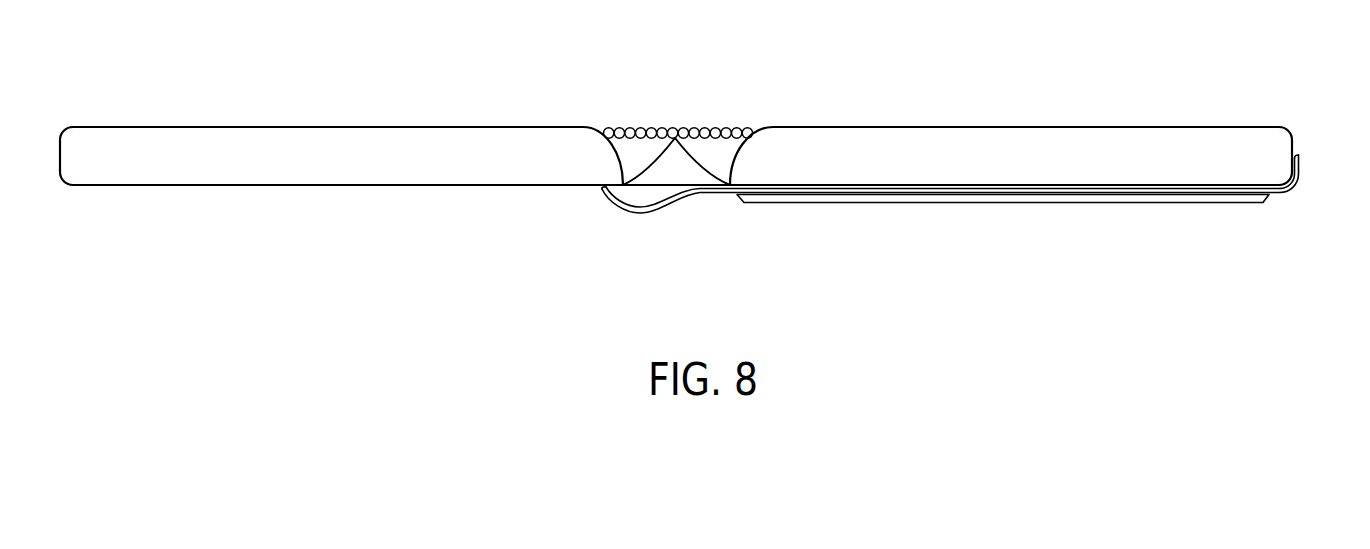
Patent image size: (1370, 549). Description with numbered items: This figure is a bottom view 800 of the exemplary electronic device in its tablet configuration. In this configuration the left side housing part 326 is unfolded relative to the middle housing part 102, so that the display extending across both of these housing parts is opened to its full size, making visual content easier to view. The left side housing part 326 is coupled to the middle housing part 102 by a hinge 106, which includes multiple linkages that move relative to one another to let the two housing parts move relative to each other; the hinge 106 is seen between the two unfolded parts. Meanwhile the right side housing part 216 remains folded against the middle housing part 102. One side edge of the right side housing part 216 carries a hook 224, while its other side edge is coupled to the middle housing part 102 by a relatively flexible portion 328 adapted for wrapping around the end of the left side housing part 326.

The bottom view 800 is at (705, 150).
The left side housing part 326 is at (339, 133).
The middle housing part 102 is at (1017, 133).
The hinge 106 is at (663, 133).
The hook 224 is at (647, 213).
The right side housing part 216 is at (1000, 190).
The flexible portion 328 is at (1290, 190).